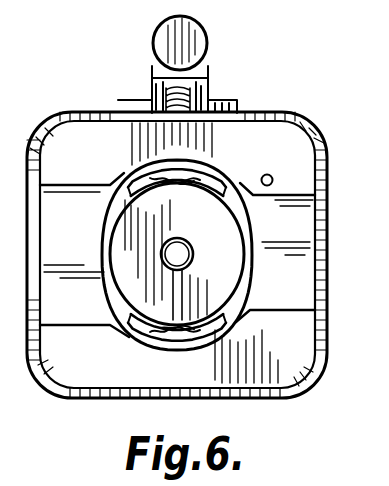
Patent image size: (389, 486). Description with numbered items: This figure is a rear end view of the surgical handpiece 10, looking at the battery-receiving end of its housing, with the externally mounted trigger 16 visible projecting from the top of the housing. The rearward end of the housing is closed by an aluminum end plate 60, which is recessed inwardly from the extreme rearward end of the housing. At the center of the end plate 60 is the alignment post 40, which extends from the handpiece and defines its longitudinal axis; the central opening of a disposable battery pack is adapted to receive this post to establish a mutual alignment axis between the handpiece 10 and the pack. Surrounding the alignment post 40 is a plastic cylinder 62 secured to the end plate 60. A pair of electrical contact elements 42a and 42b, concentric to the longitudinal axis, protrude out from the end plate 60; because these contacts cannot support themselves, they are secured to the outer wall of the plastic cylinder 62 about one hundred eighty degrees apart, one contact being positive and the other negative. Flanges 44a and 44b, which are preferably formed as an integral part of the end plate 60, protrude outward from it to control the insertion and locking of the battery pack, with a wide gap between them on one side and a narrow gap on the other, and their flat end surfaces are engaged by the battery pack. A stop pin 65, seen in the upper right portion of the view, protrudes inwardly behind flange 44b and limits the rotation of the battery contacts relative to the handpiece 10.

The surgical handpiece 10 is at (313, 115).
The trigger 16 is at (208, 32).
The alignment post 40 is at (195, 250).
The electrical contact element 42a is at (153, 169).
The electrical contact element 42b is at (167, 331).
The flange 44a is at (294, 368).
The flange 44b is at (245, 137).
The end plate 60 is at (300, 281).
The plastic cylinder 62 is at (243, 283).
The stop pin 65 is at (272, 178).